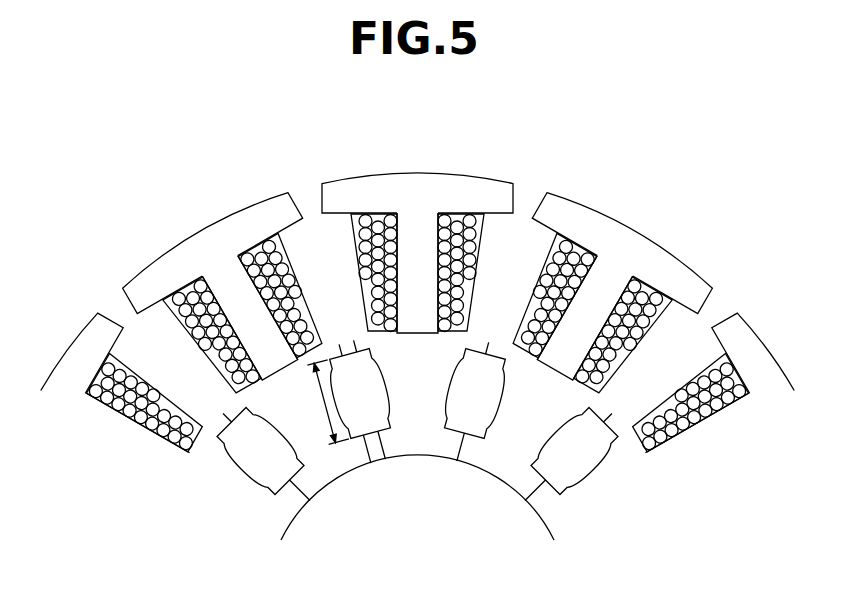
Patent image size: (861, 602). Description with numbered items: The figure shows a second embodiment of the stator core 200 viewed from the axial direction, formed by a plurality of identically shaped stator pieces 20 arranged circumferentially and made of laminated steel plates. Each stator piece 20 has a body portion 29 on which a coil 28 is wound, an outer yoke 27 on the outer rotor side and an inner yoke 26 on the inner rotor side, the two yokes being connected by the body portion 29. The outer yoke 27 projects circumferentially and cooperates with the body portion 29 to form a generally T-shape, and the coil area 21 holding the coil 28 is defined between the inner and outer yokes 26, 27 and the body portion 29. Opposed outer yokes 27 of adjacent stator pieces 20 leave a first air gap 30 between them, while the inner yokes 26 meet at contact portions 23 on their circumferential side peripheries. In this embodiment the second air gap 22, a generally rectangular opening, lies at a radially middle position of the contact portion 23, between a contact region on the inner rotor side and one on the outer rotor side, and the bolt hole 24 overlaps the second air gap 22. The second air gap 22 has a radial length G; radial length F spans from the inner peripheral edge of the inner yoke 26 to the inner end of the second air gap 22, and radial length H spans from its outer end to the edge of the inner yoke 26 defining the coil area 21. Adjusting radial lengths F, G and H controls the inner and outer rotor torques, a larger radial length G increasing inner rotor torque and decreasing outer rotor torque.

The stator core 200 is at (417, 277).
The stator piece 20 is at (417, 208).
The coil area 21 is at (520, 242).
The first air gap 30 is at (304, 192).
The outer yoke 27 is at (480, 196).
The coil 28 is at (459, 226).
The body portion 29 is at (415, 262).
The second air gap 22 is at (358, 436).
The contact portion 23 is at (463, 443).
The bolt hole 24 is at (378, 388).
The inner yoke 26 is at (470, 346).
The radial length H is at (361, 345).
The radial length G is at (323, 402).
The radial length F is at (385, 447).